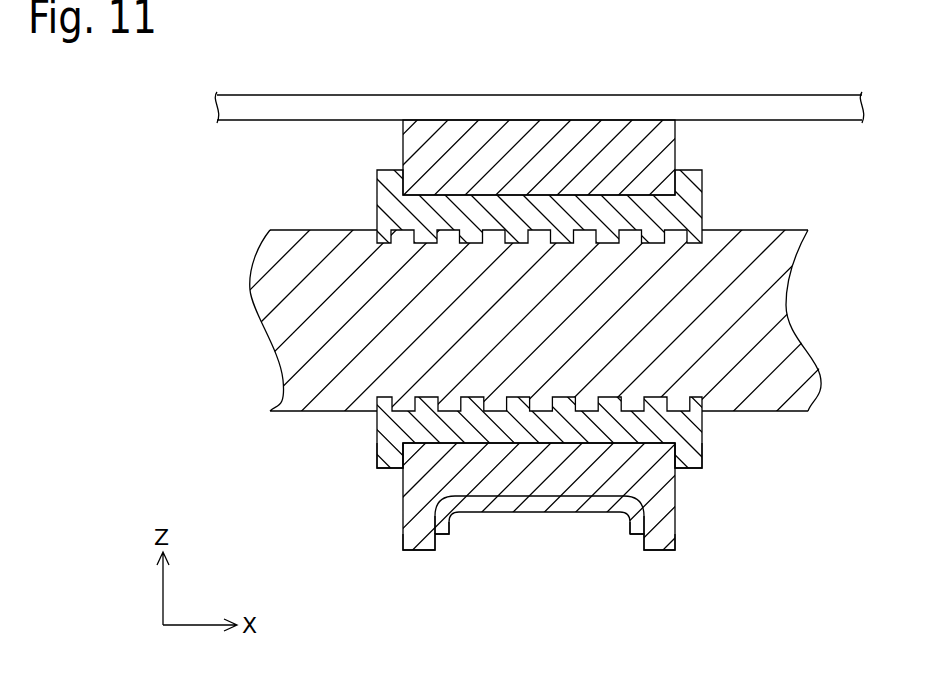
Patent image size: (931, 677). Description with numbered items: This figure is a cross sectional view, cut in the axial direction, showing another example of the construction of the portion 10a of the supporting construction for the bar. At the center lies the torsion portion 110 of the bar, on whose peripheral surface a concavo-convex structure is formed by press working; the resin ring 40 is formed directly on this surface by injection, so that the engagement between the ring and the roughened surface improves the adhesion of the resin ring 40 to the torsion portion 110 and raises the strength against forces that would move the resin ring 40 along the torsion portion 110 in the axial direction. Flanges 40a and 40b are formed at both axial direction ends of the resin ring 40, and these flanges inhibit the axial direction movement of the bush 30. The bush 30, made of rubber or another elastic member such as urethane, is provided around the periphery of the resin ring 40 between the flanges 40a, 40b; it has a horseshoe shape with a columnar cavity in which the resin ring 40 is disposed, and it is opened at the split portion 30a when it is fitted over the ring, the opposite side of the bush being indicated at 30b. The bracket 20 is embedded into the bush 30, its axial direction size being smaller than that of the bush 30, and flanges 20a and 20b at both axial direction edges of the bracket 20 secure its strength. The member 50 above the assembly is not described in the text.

The portion 10a is at (500, 577).
The bracket 20 is at (513, 506).
The flange 20a is at (446, 536).
The flange 20b is at (628, 533).
The bush 30 is at (664, 134).
The split portion 30a is at (420, 536).
The leg portion 30b is at (672, 532).
The resin ring 40 is at (695, 205).
The flange 40a is at (385, 455).
The flange 40b is at (697, 460).
The substrate 50 is at (766, 106).
The torsion portion 110 is at (796, 328).